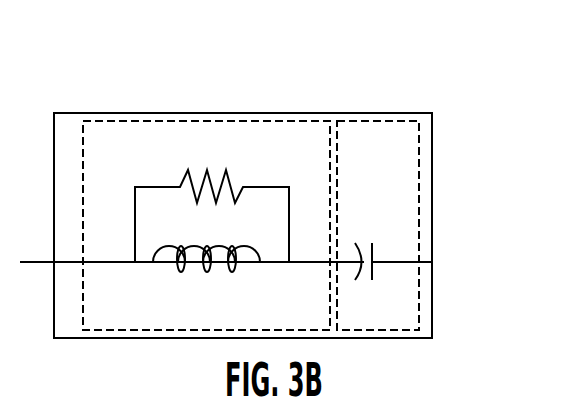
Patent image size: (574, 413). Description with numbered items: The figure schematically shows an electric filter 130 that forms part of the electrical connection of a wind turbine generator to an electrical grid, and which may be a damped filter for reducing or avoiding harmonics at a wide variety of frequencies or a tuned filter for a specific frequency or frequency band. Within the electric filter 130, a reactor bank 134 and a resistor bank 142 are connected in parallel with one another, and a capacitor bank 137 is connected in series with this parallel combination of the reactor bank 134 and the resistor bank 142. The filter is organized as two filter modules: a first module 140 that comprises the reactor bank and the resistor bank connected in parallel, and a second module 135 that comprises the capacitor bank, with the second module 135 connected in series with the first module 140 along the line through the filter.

The electric filter 130 is at (372, 62).
The reactor bank 134 is at (222, 287).
The second module 135 is at (419, 168).
The capacitor bank 137 is at (365, 238).
The first module 140 is at (221, 121).
The resistor bank 142 is at (238, 183).